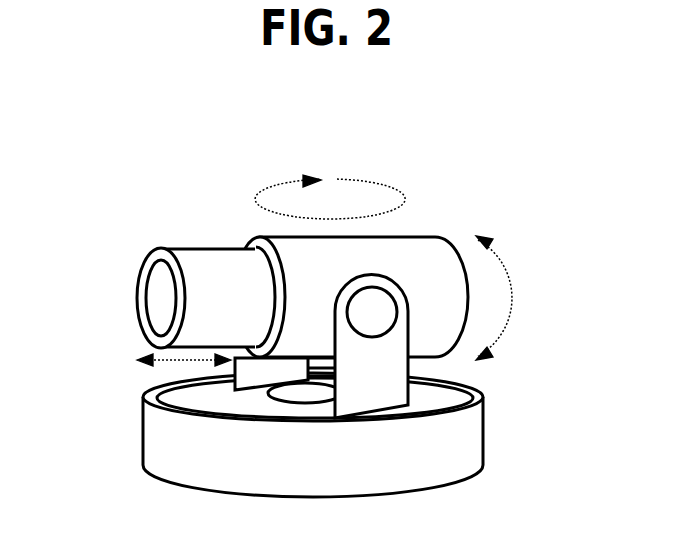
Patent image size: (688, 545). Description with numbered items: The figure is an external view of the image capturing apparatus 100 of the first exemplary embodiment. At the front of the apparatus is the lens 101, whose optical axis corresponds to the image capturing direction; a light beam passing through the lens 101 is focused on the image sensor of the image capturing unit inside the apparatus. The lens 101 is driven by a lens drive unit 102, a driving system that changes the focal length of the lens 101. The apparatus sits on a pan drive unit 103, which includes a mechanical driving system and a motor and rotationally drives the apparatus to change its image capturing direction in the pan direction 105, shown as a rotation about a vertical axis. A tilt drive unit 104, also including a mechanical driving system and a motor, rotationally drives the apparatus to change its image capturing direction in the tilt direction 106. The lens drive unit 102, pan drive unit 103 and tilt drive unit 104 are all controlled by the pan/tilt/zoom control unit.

The image capturing apparatus 100 is at (431, 246).
The lens 101 is at (153, 298).
The lens drive unit 102 is at (192, 260).
The pan drive unit 103 is at (314, 397).
The tilt drive unit 104 is at (366, 304).
The pan direction 105 is at (279, 188).
The tilt direction 106 is at (510, 272).